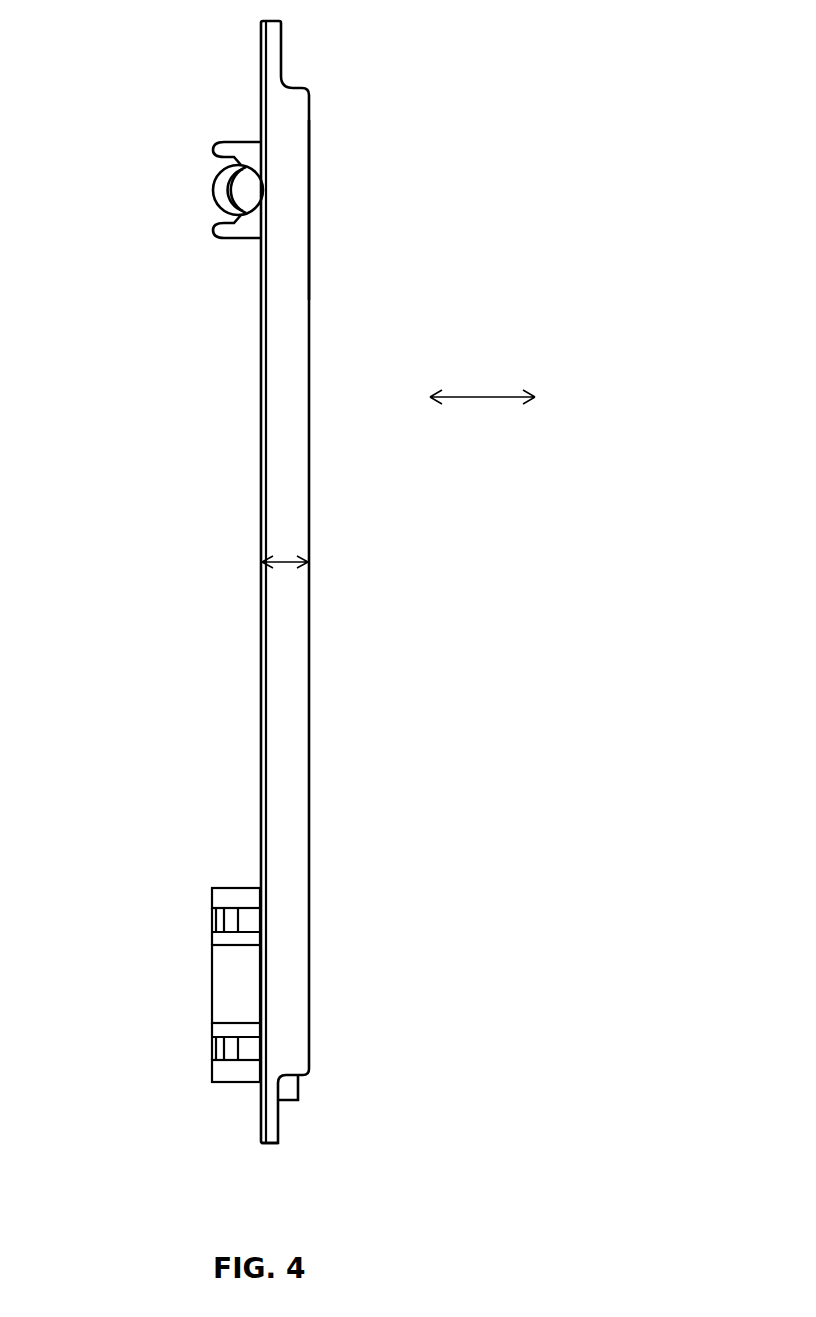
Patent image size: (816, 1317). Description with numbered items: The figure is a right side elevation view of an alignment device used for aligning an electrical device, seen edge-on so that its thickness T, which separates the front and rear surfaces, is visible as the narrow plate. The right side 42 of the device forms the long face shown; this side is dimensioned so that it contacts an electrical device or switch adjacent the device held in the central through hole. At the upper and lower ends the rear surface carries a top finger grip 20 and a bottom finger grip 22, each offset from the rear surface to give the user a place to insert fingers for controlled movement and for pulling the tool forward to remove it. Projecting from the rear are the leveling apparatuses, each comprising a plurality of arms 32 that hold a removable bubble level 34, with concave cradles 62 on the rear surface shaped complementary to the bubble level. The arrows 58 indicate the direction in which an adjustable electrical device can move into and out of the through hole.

The top finger grip 20 is at (281, 46).
The bottom finger grip 22 is at (281, 1131).
The arms 32 is at (225, 148).
The bubble level 34 is at (242, 187).
The right side 42 is at (282, 200).
The arrows 58 is at (485, 392).
The cradles 62 is at (295, 1086).
The thickness T is at (287, 565).